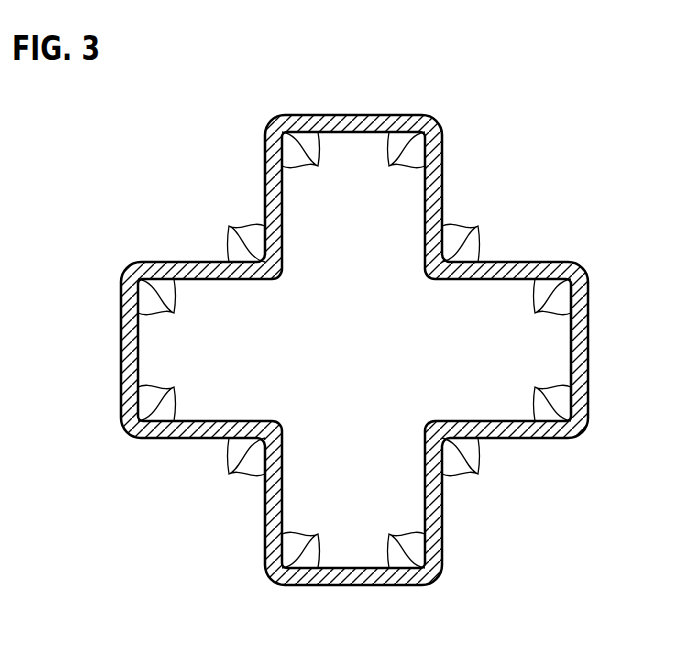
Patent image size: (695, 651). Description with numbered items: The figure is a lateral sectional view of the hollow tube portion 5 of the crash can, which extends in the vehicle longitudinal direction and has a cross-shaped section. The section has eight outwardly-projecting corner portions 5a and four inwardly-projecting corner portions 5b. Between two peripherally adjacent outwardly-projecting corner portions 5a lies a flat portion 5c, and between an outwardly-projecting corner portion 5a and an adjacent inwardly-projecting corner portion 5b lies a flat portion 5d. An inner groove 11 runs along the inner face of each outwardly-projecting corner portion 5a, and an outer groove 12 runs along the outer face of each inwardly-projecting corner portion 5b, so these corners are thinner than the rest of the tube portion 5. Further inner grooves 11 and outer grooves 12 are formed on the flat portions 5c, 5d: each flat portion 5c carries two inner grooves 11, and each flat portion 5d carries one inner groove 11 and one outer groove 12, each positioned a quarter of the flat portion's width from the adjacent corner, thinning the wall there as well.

The tube portion 5 is at (551, 78).
The outwardly-projecting corner portion 5a is at (275, 121).
The inwardly-projecting corner portion 5b is at (271, 276).
The flat portion 5c is at (354, 114).
The flat portion 5d is at (264, 166).
The inner groove 11 is at (354, 350).
The outer groove 12 is at (356, 351).